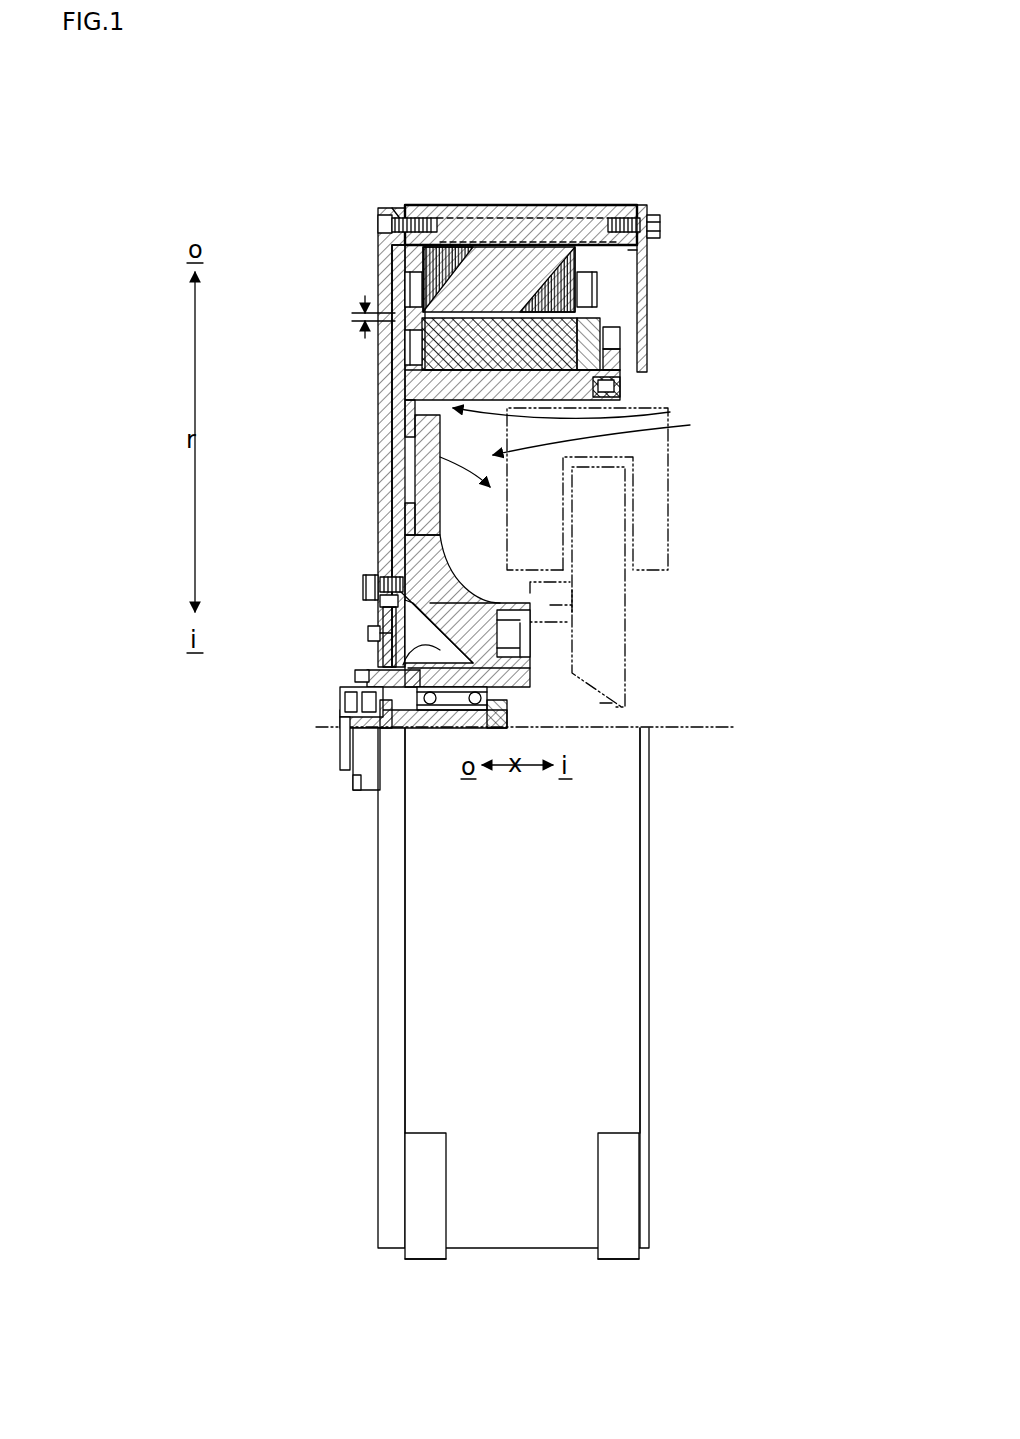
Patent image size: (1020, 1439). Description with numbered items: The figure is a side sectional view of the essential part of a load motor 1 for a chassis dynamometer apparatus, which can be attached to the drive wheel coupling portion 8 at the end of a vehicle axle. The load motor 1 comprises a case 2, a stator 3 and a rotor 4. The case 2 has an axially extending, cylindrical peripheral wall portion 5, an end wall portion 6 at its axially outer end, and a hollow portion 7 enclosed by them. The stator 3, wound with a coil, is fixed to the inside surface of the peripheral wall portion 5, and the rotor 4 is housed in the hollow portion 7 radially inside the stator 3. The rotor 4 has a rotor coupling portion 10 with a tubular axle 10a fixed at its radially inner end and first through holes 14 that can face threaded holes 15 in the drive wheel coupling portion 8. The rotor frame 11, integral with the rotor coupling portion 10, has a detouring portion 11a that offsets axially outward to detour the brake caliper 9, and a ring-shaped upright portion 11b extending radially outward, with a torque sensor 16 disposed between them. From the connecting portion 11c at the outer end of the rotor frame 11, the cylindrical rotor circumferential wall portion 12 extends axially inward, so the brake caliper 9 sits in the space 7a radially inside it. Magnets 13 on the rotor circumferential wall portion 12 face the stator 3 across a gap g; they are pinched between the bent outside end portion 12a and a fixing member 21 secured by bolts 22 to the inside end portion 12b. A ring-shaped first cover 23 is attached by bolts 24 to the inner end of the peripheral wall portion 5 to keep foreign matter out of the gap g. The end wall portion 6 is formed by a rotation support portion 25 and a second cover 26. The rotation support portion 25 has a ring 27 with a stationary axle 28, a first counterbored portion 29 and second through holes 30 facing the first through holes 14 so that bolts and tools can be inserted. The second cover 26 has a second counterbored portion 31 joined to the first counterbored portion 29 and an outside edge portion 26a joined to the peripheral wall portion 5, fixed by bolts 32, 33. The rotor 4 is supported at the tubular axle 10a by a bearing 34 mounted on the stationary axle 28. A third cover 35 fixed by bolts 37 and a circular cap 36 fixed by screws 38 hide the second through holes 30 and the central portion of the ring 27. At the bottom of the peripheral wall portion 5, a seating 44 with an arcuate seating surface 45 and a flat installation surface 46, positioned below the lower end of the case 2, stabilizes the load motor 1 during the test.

The load motor 1 is at (720, 127).
The case 2 is at (522, 185).
The stator 3 is at (600, 262).
The rotor 4 is at (620, 437).
The peripheral wall portion 5 is at (463, 203).
The end wall portion 6 is at (370, 440).
The hollow portion 7 is at (445, 478).
The space 7a is at (455, 445).
The drive wheel coupling portion 8 is at (606, 603).
The brake caliper 9 is at (642, 496).
The rotor coupling portion 10 is at (520, 614).
The tubular axle 10a is at (376, 758).
The rotor frame 11 is at (380, 505).
The detouring portion 11a is at (440, 557).
The upright portion 11b is at (398, 412).
The connecting portion 11c is at (660, 410).
The rotor circumferential wall portion 12 is at (596, 292).
The outside end portion 12a is at (420, 378).
The inside end portion 12b is at (603, 387).
The magnet 13 is at (393, 345).
The first through hole 14 is at (478, 640).
The threaded hole 15 is at (580, 640).
The torque sensor 16 is at (380, 492).
The fixing member 21 is at (622, 362).
The bolt 22 is at (621, 390).
The first cover 23 is at (648, 317).
The bolt 24 is at (661, 218).
The rotation support portion 25 is at (330, 683).
The second cover 26 is at (378, 276).
The outside edge portion 26a is at (391, 212).
The ring 27 is at (382, 605).
The stationary axle 28 is at (455, 712).
The first counterbored portion 29 is at (382, 575).
The second through hole 30 is at (380, 651).
The second counterbored portion 31 is at (441, 572).
The bolt 32 is at (366, 583).
The bolt 33 is at (378, 226).
The bearing 34 is at (425, 692).
The third cover 35 is at (380, 664).
The circular cap 36 is at (345, 712).
The bolt 37 is at (378, 633).
The screw 38 is at (368, 678).
The seating 44 is at (415, 1195).
The seating surface 45 is at (405, 1133).
The installation surface 46 is at (410, 1260).
The gap g is at (362, 316).